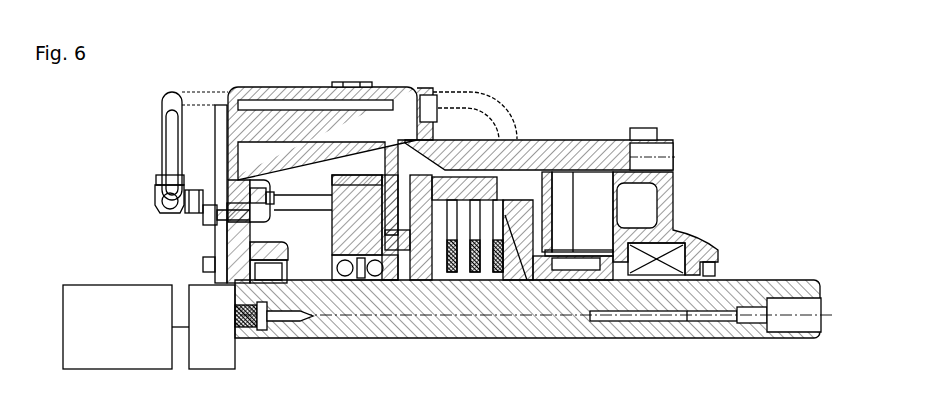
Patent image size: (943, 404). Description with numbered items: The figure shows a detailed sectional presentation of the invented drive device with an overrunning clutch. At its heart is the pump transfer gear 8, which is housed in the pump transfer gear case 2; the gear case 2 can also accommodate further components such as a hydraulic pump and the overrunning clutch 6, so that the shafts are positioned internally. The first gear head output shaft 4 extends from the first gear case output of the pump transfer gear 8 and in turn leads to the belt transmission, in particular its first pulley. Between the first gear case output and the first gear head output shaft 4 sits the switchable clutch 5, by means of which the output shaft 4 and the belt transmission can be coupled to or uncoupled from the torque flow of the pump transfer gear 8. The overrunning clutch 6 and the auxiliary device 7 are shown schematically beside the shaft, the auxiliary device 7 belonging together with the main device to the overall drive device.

The gear case 2 is at (560, 150).
The first gear head output shaft 4 is at (797, 287).
The switchable clutch 5 is at (507, 220).
The overrunning clutch 6 is at (190, 280).
The auxiliary device 7 is at (140, 295).
The pump transfer gear 8 is at (368, 197).